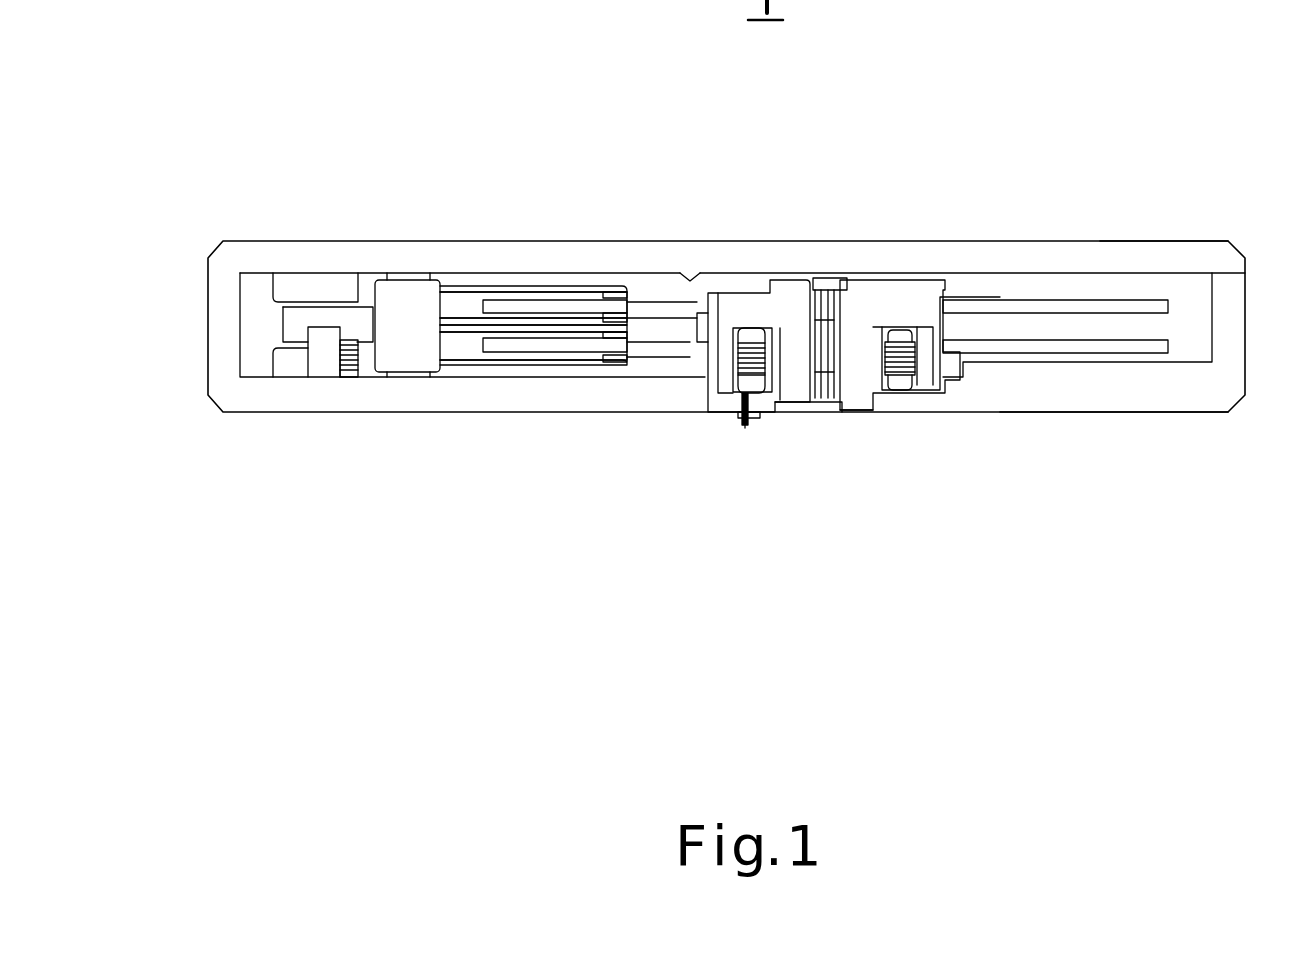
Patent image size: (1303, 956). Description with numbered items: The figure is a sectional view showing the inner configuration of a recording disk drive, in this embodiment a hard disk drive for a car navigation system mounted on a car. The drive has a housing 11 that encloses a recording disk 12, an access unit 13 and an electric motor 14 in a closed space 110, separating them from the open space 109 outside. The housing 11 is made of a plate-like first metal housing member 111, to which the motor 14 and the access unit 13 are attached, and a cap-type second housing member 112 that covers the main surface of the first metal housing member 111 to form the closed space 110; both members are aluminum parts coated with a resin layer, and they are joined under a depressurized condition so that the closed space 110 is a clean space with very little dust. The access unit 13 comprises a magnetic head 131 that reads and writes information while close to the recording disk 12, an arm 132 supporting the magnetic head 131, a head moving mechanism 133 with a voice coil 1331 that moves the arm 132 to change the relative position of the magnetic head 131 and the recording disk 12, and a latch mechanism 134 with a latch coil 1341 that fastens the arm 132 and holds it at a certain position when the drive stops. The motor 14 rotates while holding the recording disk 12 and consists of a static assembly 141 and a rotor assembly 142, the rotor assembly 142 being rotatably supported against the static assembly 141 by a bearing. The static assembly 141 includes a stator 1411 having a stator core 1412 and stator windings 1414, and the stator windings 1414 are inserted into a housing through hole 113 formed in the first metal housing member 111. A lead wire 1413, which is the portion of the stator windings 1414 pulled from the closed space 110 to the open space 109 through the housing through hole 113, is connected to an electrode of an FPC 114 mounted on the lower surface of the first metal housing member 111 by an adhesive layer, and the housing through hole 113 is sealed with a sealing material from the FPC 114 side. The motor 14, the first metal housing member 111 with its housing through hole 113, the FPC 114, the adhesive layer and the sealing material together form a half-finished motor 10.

The half-finished motor 10 is at (705, 493).
The housing 11 is at (1245, 412).
The open space 109 is at (503, 622).
The closed space 110 is at (1197, 327).
The first metal housing member 111 is at (1008, 378).
The second housing member 112 is at (1178, 258).
The housing through hole 113 is at (749, 436).
The FPC 114 is at (743, 415).
The recording disk 12 is at (1077, 308).
The access unit 13 is at (460, 306).
The magnetic head 131 is at (615, 358).
The arm 132 is at (543, 359).
The head moving mechanism 133 is at (258, 331).
The voice coil 1331 is at (362, 323).
The latch mechanism 134 is at (315, 358).
The latch coil 1341 is at (348, 360).
The electric motor 14 is at (978, 292).
The static assembly 141 is at (807, 430).
The stator 1411 is at (868, 420).
The stator core 1412 is at (900, 363).
The lead wire 1413 is at (742, 400).
The stator windings 1414 is at (762, 332).
The rotor assembly 142 is at (877, 281).